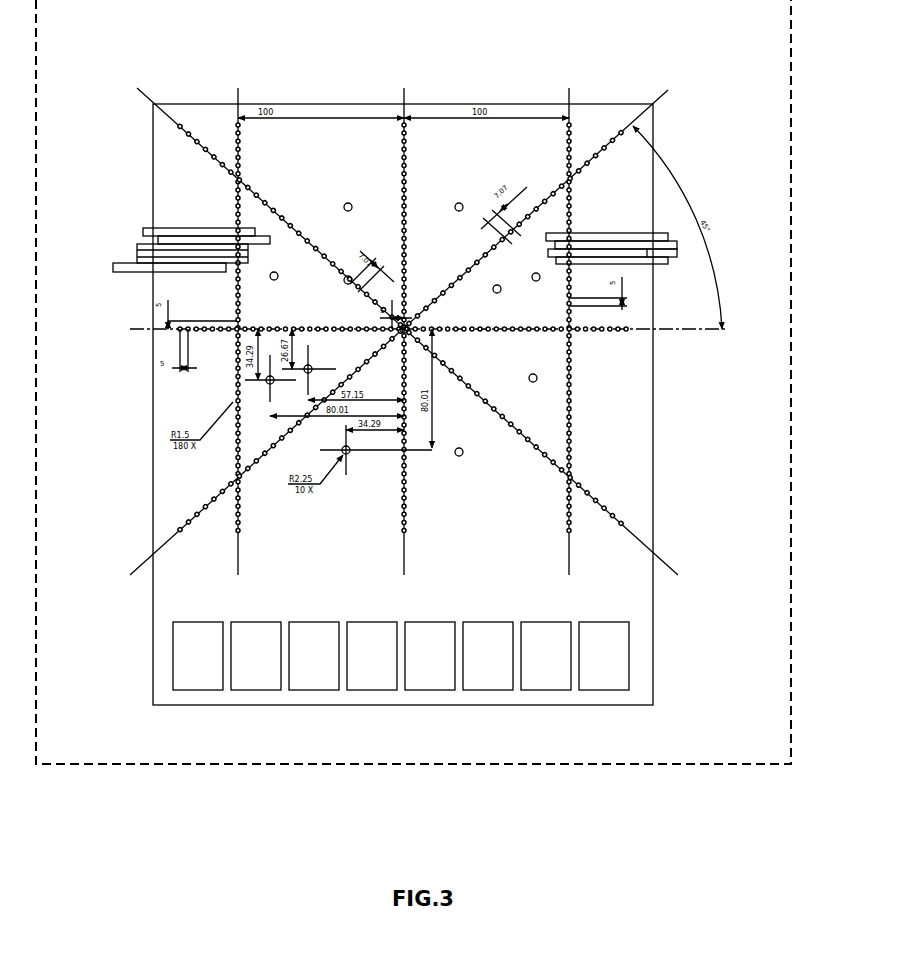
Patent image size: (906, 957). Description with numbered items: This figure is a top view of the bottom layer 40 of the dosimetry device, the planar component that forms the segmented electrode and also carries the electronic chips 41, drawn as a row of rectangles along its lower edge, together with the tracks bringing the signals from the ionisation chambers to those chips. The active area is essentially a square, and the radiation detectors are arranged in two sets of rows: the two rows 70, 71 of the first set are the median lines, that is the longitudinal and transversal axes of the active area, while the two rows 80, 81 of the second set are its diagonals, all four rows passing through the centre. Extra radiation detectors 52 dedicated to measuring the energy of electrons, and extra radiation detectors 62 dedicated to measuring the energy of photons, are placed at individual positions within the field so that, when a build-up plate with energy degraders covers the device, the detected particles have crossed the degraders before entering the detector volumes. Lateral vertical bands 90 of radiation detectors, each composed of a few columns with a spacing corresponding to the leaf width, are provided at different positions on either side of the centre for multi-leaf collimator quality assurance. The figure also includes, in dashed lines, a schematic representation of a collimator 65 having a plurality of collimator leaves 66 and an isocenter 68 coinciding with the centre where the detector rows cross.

The bottom layer 40 is at (146, 300).
The electronic chips 41 is at (612, 678).
The extra radiation detectors 52 is at (462, 196).
The extra radiation detectors 62 is at (490, 293).
The collimator 65 is at (800, 94).
The collimator leaves 66 is at (672, 236).
The isocenter 68 is at (414, 336).
The row of the first set 70 is at (400, 125).
The row of the first set 71 is at (623, 339).
The row of the second set 80 is at (189, 150).
The row of the second set 81 is at (608, 128).
The lateral bands of radiation detectors 90 is at (241, 536).